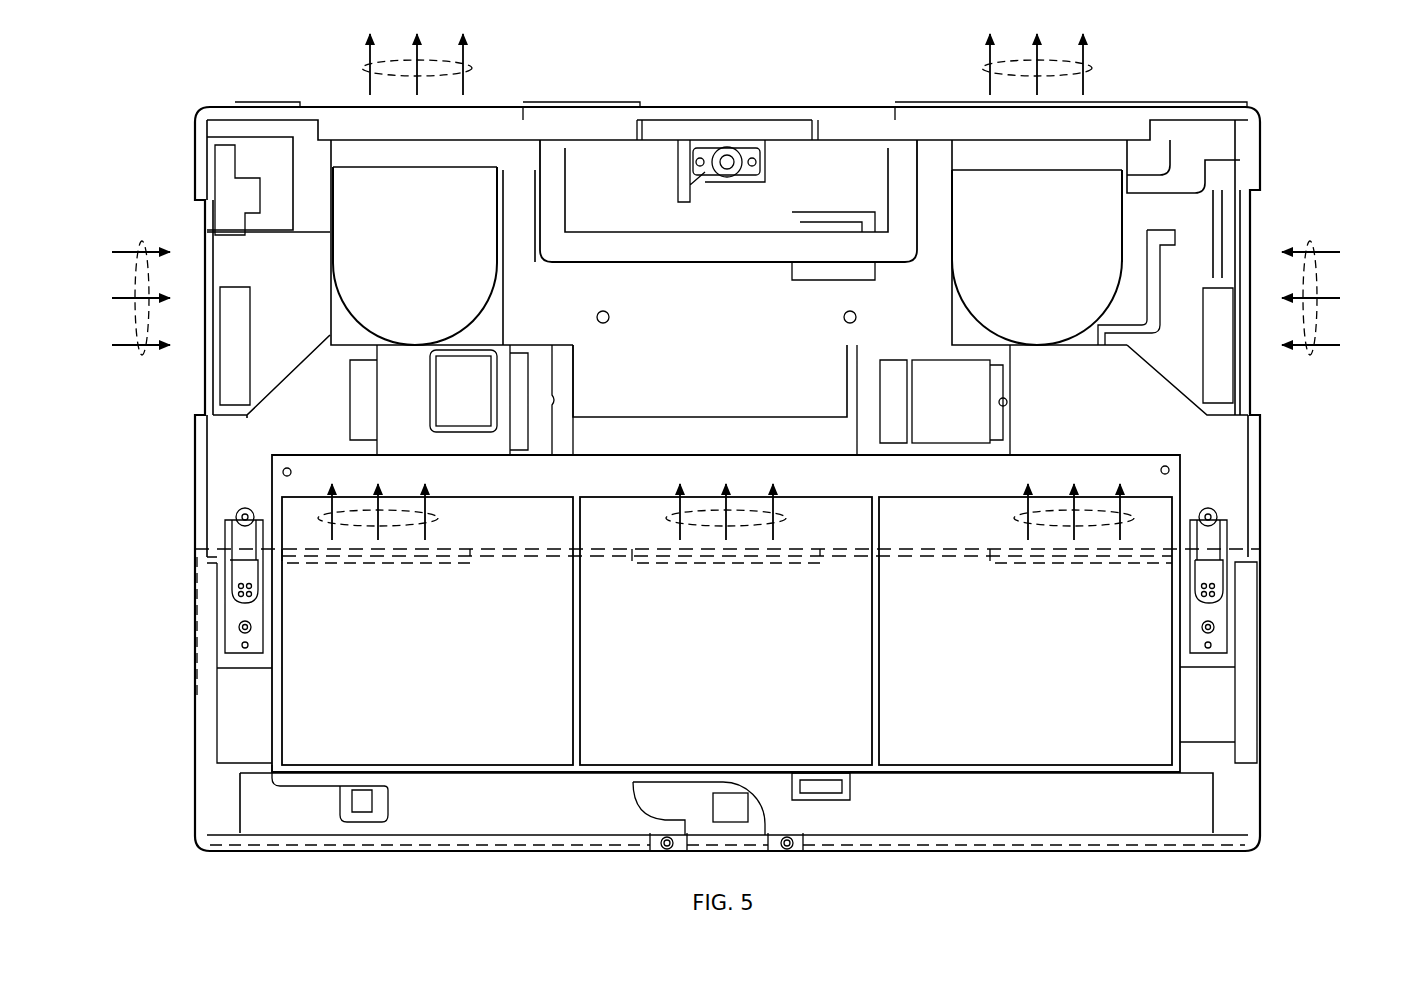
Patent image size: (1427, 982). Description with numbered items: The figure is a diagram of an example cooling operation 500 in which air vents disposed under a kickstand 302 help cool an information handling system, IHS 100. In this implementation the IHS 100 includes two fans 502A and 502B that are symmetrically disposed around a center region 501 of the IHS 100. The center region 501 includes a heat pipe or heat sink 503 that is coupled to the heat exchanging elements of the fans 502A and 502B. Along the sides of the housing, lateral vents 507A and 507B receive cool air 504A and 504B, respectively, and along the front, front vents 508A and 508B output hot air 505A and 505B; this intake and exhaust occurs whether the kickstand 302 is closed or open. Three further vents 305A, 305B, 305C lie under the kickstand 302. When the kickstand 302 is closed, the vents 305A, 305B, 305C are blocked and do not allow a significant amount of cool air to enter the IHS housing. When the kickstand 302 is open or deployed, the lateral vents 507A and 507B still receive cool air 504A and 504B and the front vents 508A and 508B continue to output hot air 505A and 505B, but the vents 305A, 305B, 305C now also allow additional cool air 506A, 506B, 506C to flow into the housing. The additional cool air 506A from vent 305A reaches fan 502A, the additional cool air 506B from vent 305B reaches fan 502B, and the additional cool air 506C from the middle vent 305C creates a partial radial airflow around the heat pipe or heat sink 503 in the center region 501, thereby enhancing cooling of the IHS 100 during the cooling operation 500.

The IHS 100 is at (1208, 440).
The cooling operation 500 is at (140, 646).
The center region 501 is at (707, 329).
The fan 502A is at (470, 275).
The fan 502B is at (985, 282).
The heat pipe or heat sink 503 is at (640, 230).
The cool air 504A is at (135, 278).
The cool air 504B is at (1318, 278).
The hot air 505A is at (358, 66).
The hot air 505B is at (1095, 66).
The additional cool air 506A is at (400, 527).
The additional cool air 506B is at (1050, 527).
The additional cool air 506C is at (700, 527).
The vent 305A is at (366, 565).
The vent 305B is at (1082, 565).
The vent 305C is at (733, 565).
The lateral vent 507A is at (203, 207).
The lateral vent 507B is at (1250, 224).
The front vent 508A is at (505, 118).
The front vent 508B is at (950, 118).
The kickstand 302 is at (494, 852).